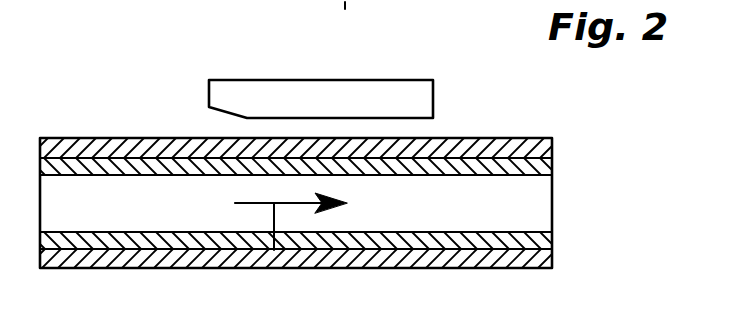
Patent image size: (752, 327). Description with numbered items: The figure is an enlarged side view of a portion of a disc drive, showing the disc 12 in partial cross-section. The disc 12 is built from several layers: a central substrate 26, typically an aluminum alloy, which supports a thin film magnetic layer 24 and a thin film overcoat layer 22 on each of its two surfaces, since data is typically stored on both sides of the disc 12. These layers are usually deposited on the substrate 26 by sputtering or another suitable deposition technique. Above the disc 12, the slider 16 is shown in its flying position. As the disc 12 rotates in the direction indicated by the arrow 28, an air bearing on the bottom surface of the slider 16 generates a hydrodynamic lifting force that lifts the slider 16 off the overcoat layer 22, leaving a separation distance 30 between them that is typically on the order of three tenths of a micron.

The disc 12 is at (517, 270).
The slider 16 is at (407, 97).
The overcoat layer 22 is at (553, 143).
The magnetic layer 24 is at (538, 163).
The substrate 26 is at (527, 193).
The arrow 28 is at (270, 252).
The separation distance 30 is at (210, 125).